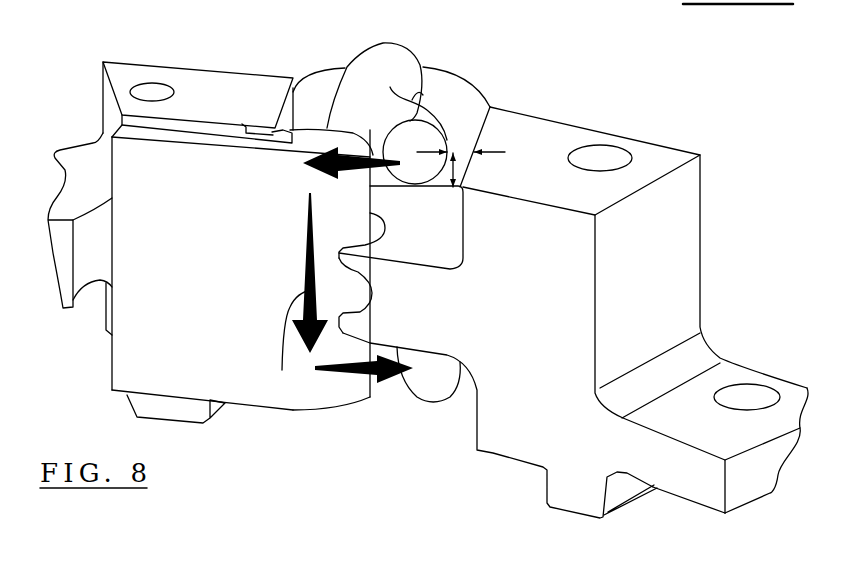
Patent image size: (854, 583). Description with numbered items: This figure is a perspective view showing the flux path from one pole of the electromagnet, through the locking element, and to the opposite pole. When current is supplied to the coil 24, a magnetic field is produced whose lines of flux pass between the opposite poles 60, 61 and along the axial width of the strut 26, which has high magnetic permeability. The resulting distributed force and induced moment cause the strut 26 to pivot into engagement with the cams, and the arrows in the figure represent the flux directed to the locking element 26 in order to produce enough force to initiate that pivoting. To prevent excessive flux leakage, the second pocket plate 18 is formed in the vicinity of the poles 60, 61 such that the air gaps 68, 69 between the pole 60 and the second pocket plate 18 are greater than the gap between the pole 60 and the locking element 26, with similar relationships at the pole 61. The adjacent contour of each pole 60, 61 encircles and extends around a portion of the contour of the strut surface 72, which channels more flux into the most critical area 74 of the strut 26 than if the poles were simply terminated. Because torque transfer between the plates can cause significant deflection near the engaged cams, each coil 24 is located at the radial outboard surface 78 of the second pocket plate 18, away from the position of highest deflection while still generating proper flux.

The second pocket plate 18 is at (707, 253).
The coil 24 is at (322, 90).
The strut 26 is at (247, 370).
The pole 60 is at (385, 53).
The pole 61 is at (418, 393).
The air gap 68 is at (474, 155).
The air gap 69 is at (453, 190).
The strut surface 72 is at (353, 385).
The most critical area 74 is at (281, 370).
The radial outboard surface 78 is at (192, 65).